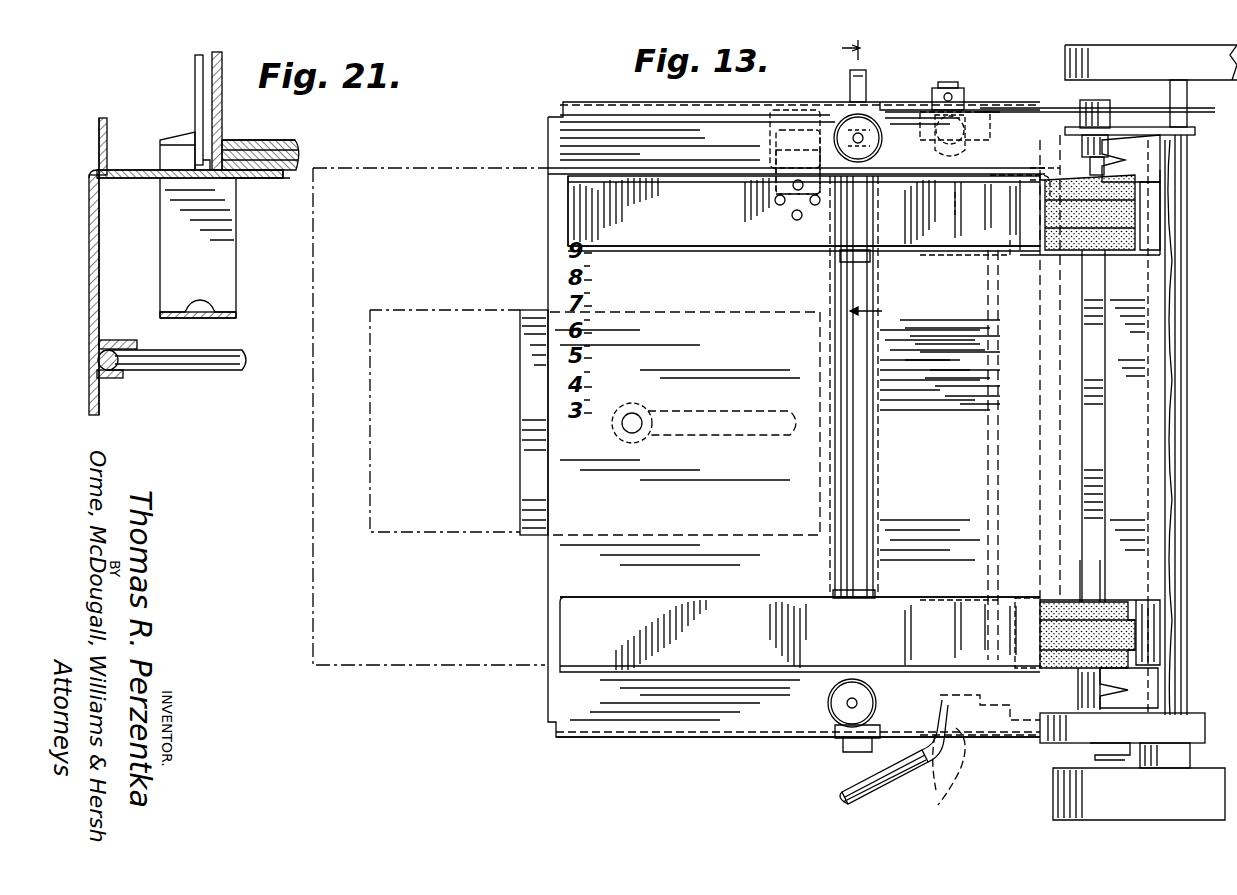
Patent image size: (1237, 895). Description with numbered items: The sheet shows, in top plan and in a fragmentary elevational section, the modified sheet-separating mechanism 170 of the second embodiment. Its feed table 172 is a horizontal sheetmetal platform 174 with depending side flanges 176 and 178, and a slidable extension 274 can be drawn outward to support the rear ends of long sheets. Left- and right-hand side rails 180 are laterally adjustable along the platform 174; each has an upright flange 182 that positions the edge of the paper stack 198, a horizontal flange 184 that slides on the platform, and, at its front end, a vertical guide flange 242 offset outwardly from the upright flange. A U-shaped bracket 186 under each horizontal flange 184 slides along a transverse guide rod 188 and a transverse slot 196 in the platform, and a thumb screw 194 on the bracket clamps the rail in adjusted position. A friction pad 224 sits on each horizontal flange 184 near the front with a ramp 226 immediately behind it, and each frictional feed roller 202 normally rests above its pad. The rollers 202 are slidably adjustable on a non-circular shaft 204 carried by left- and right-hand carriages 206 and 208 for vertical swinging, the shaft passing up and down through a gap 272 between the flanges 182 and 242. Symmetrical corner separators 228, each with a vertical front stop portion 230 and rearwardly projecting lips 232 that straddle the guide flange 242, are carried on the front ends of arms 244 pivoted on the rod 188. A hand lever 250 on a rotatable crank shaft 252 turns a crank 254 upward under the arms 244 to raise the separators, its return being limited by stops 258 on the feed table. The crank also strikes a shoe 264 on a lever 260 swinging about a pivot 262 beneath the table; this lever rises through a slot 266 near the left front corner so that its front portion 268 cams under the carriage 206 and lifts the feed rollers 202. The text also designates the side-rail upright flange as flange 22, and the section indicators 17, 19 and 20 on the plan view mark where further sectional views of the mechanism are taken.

In FIG. 13, the section line 17 is at (740, 244).
In FIG. 13, the section line 19 is at (1115, 97).
In FIG. 13, the section line 20 is at (864, 180).
In FIG. 13, the upright flange 22 is at (1045, 793).
In FIG. 13, the sheet-separating mechanism 170 is at (574, 90).
In FIG. 13, the feed table 172 is at (545, 743).
In FIG. 21, the horizontal sheetmetal platform 174 is at (134, 168).
In FIG. 13, the horizontal sheetmetal platform 174 is at (565, 562).
In FIG. 21, the side flange 176 is at (89, 400).
In FIG. 13, the side flange 176 is at (637, 96).
In FIG. 13, the side flange 178 is at (630, 742).
In FIG. 13, the side rail 180 is at (560, 200).
In FIG. 21, the upright flange 182 is at (222, 108).
In FIG. 13, the upright flange 182 is at (656, 170).
In FIG. 21, the horizontal flange 184 is at (283, 184).
In FIG. 13, the horizontal flange 184 is at (680, 240).
In FIG. 13, the U-shaped bracket 186 is at (850, 255).
In FIG. 13, the guide rod 188 is at (830, 478).
In FIG. 13, the thumb screw 194 is at (846, 115).
In FIG. 13, the transverse slot 196 is at (890, 480).
In FIG. 21, the stack 198 is at (298, 136).
In FIG. 13, the feed roller 202 is at (1045, 226).
In FIG. 13, the shaft 204 is at (1080, 404).
In FIG. 13, the left-hand carriage 206 is at (1080, 124).
In FIG. 13, the right-hand carriage 208 is at (1063, 735).
In FIG. 13, the friction pad 224 is at (1058, 260).
In FIG. 13, the ramp 226 is at (1024, 600).
In FIG. 21, the corner separator 228 is at (224, 132).
In FIG. 13, the corner separator 228 is at (1165, 176).
In FIG. 21, the front stop portion 230 is at (222, 262).
In FIG. 21, the lip 232 is at (168, 140).
In FIG. 21, the vertical flange 242 is at (195, 66).
In FIG. 13, the vertical flange 242 is at (1150, 165).
In FIG. 21, the arm 244 is at (220, 322).
In FIG. 13, the arm 244 is at (922, 250).
In FIG. 13, the lever 250 is at (845, 792).
In FIG. 13, the crank shaft 252 is at (933, 777).
In FIG. 21, the crank 254 is at (196, 376).
In FIG. 13, the crank 254 is at (990, 490).
In FIG. 21, the stop 258 is at (110, 380).
In FIG. 13, the lever 260 is at (890, 106).
In FIG. 13, the pivot 262 is at (768, 128).
In FIG. 21, the shoe 264 is at (137, 344).
In FIG. 13, the shoe 264 is at (890, 152).
In FIG. 13, the slot 266 is at (1010, 104).
In FIG. 21, the front portion 268 is at (99, 130).
In FIG. 13, the front portion 268 is at (1080, 114).
In FIG. 13, the gap 272 is at (1030, 182).
In FIG. 13, the extension 274 is at (520, 450).